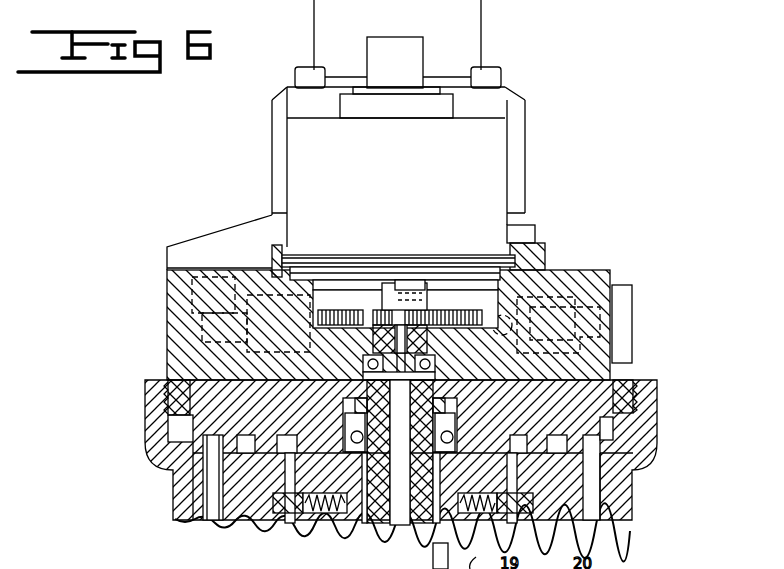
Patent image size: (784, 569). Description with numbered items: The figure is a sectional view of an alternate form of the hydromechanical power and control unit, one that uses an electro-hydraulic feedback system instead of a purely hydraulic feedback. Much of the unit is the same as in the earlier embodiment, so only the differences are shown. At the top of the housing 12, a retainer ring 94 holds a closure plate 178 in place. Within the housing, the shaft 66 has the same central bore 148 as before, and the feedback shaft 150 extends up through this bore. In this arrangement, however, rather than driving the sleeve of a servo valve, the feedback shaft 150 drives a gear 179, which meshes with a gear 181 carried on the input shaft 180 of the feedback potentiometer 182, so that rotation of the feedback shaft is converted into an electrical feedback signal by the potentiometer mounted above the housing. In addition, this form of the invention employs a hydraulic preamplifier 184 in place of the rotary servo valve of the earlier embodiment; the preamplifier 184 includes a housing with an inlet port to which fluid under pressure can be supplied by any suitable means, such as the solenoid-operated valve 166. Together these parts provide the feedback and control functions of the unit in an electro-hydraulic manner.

The feedback potentiometer 182 is at (553, 170).
The input shaft 180 is at (393, 320).
The gear 181 is at (367, 308).
The feedback shaft 150 is at (430, 323).
The gear 179 is at (463, 313).
The retainer ring 94 is at (632, 388).
The housing 12 is at (657, 405).
The closure plate 178 is at (632, 455).
The shaft 66 is at (373, 525).
The central bore 148 is at (395, 520).
The solenoid-operated valve 166 is at (472, 552).
The hydraulic preamplifier 184 is at (634, 511).